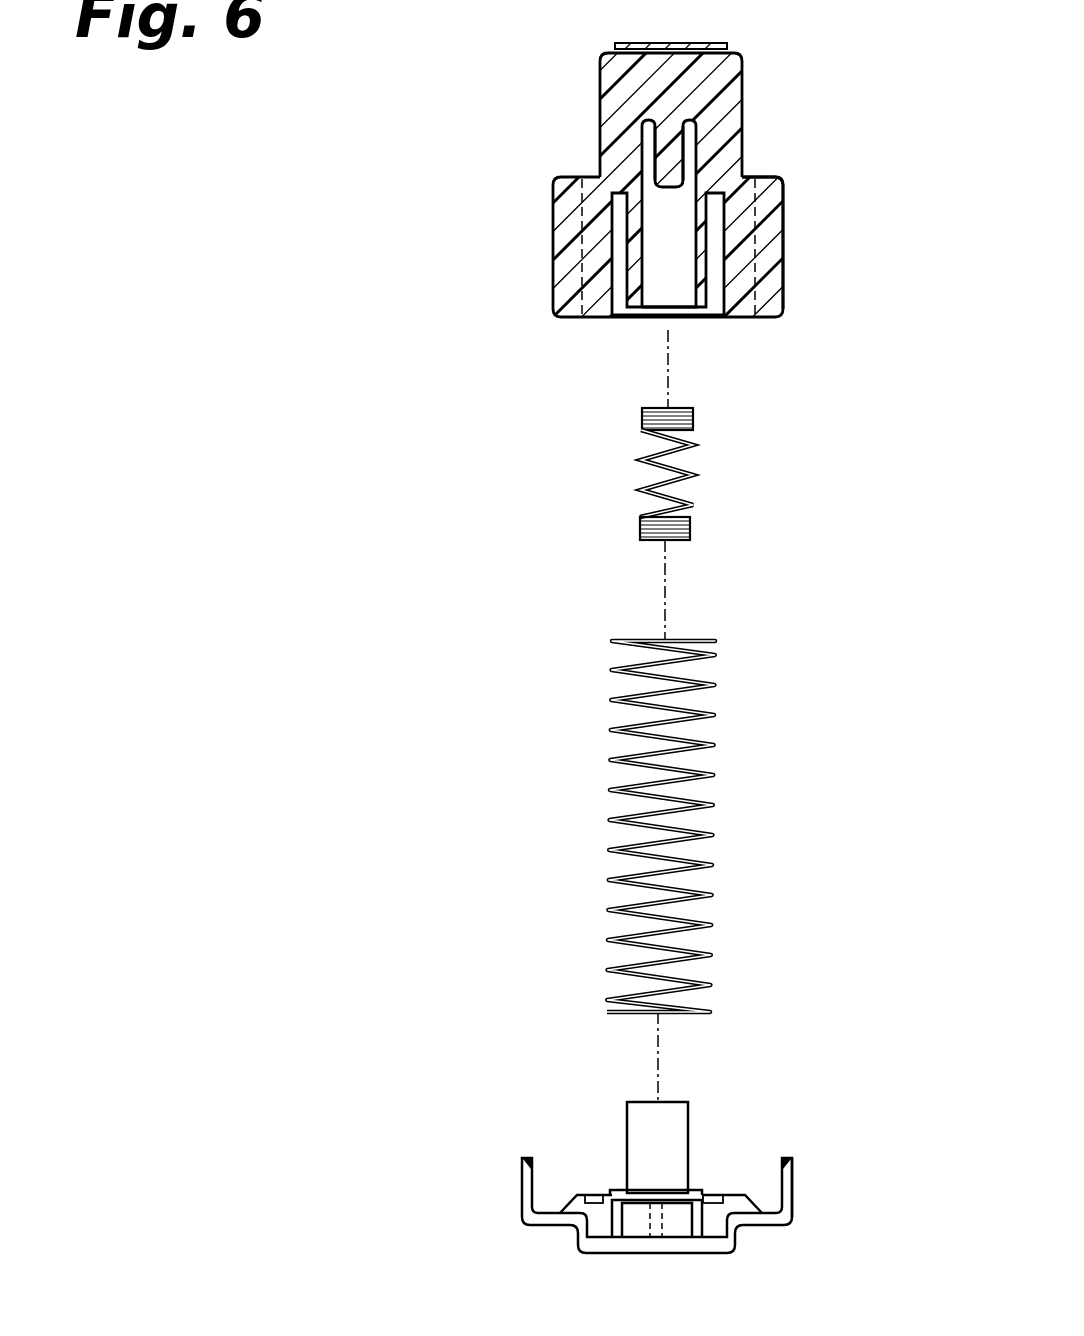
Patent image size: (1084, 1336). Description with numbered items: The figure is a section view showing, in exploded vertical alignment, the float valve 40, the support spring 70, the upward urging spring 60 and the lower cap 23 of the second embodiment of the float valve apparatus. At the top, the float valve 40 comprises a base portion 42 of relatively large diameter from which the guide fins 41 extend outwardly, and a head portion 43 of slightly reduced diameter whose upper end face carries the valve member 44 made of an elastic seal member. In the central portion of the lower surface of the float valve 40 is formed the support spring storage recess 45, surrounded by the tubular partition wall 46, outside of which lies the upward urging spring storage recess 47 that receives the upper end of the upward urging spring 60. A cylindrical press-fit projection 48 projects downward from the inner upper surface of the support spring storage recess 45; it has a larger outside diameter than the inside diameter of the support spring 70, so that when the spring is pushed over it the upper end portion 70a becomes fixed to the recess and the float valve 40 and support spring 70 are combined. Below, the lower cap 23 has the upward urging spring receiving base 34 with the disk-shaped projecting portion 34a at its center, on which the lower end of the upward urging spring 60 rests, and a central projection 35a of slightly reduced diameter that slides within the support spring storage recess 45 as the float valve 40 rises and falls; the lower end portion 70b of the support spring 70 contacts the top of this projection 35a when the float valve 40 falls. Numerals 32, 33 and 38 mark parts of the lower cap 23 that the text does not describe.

The lower cap 23 is at (763, 1243).
The bracket upright end 32 is at (522, 1163).
The bracket side wall 33 is at (792, 1200).
The upward urging spring receiving base 34 is at (590, 1195).
The disk-shaped projecting portion 34a is at (618, 1192).
The projection 35a is at (678, 1113).
The hub 38 is at (730, 1210).
The float valve 40 is at (568, 71).
The guide fins 41 is at (772, 272).
The base portion 42 is at (742, 218).
The head portion 43 is at (742, 105).
The valve member 44 is at (665, 42).
The support spring storage recess 45 is at (655, 190).
The partition wall 46 is at (635, 237).
The upward urging spring storage recess 47 is at (620, 258).
The press-fit projection 48 is at (672, 155).
The upward urging spring 60 is at (713, 800).
The support spring 70 is at (705, 455).
The upper end portion 70a is at (693, 420).
The lower end portion 70b is at (690, 525).